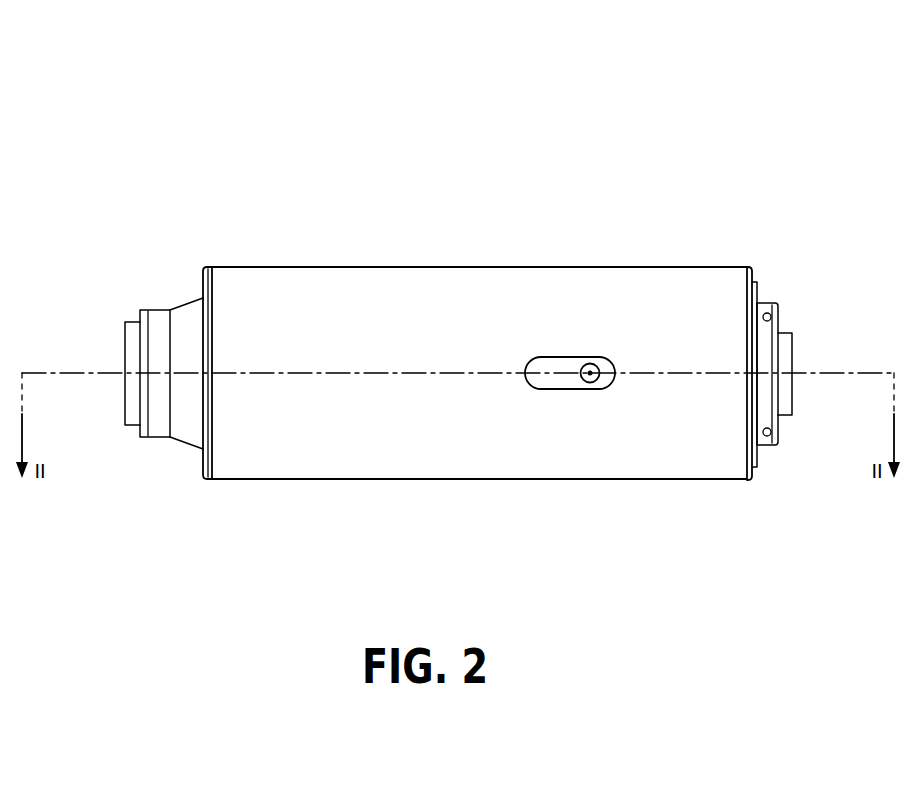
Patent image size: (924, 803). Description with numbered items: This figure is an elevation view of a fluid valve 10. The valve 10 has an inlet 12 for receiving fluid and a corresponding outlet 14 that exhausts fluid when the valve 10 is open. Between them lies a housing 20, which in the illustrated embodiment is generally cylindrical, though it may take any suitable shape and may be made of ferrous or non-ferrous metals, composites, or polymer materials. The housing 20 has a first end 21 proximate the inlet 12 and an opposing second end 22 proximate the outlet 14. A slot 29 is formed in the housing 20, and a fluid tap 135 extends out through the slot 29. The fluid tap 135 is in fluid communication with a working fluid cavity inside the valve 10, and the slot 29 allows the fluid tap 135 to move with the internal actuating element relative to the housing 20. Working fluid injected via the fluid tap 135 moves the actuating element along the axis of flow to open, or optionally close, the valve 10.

The fluid valve 10 is at (491, 168).
The inlet 12 is at (123, 350).
The outlet 14 is at (797, 357).
The housing 20 is at (327, 267).
The first end 21 is at (195, 298).
The second end 22 is at (733, 268).
The slot 29 is at (538, 390).
The fluid tap 135 is at (578, 390).